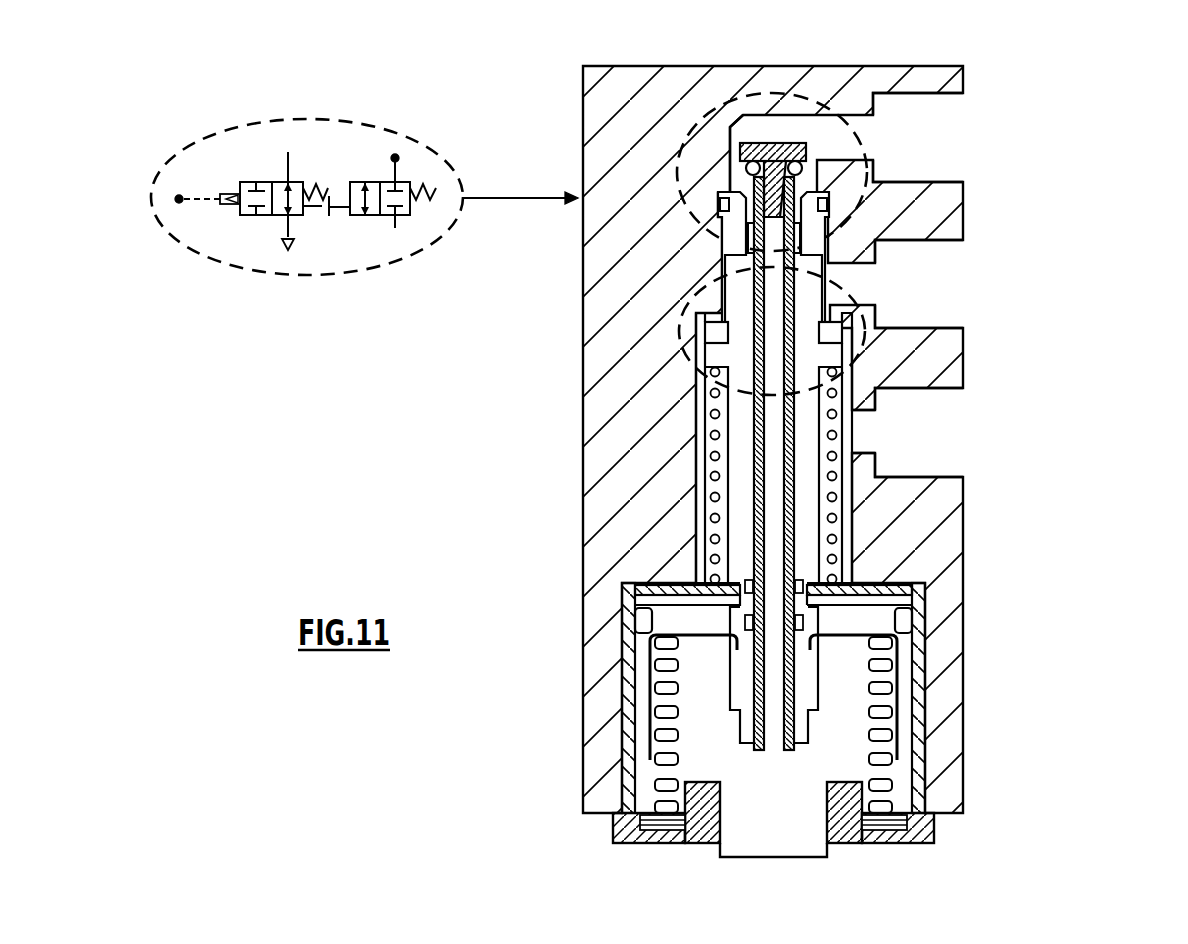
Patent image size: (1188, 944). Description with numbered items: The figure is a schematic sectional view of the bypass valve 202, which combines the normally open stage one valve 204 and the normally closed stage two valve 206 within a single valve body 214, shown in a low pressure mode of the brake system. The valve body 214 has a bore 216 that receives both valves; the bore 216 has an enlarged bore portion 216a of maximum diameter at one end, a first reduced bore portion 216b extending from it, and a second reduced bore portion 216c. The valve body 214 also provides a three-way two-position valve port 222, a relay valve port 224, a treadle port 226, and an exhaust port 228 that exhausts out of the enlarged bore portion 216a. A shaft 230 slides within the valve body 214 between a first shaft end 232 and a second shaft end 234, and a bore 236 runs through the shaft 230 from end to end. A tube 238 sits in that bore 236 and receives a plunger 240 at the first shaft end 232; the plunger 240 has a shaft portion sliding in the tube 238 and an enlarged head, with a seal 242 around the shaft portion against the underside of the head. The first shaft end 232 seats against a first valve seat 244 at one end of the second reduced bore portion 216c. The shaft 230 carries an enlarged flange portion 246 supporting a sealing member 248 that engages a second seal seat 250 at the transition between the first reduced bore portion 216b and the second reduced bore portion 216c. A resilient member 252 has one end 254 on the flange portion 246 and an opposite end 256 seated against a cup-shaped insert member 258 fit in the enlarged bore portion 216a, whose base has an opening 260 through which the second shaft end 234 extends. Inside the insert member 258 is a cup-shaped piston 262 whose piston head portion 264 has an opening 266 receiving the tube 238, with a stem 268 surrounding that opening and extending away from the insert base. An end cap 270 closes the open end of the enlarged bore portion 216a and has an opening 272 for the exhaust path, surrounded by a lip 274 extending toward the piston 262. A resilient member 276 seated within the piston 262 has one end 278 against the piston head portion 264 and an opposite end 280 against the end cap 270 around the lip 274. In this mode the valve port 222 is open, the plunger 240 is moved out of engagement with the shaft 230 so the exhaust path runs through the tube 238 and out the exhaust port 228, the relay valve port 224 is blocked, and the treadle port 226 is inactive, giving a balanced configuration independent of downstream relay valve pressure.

The bypass valve 202 is at (458, 146).
The stage one valve 204 is at (830, 228).
The stage two valve 206 is at (827, 425).
The valve body 214 is at (603, 284).
The bore 216 is at (752, 113).
The enlarged bore portion 216a is at (935, 806).
The first reduced bore portion 216b is at (876, 531).
The second reduced bore portion 216c is at (722, 250).
The 3/2 valve port 222 is at (945, 121).
The relay valve port 224 is at (950, 296).
The treadle port 226 is at (950, 448).
The exhaust port 228 is at (828, 818).
The shaft 230 is at (733, 472).
The first shaft end 232 is at (727, 190).
The second shaft end 234 is at (743, 560).
The bore 236 is at (828, 240).
The tube 238 is at (753, 433).
The plunger 240 is at (780, 143).
The seal 242 is at (806, 157).
The first valve seat 244 is at (800, 217).
The enlarged flange portion 246 is at (698, 366).
The sealing member 248 is at (846, 327).
The second seal seat 250 is at (696, 300).
The resilient member 252 is at (876, 455).
The one end of resilient member 254 is at (847, 372).
The opposite end of resilient member 256 is at (864, 573).
The insert member 258 is at (907, 646).
The opening 260 is at (906, 590).
The piston 262 is at (643, 713).
The piston head portion 264 is at (880, 622).
The opening 266 is at (738, 608).
The stem 268 is at (803, 696).
The end cap 270 is at (625, 830).
The opening 272 is at (704, 812).
The lip 274 is at (830, 798).
The resilient member 276 is at (887, 746).
The one end of resilient member 278 is at (893, 663).
The opposite end of resilient member 280 is at (935, 836).